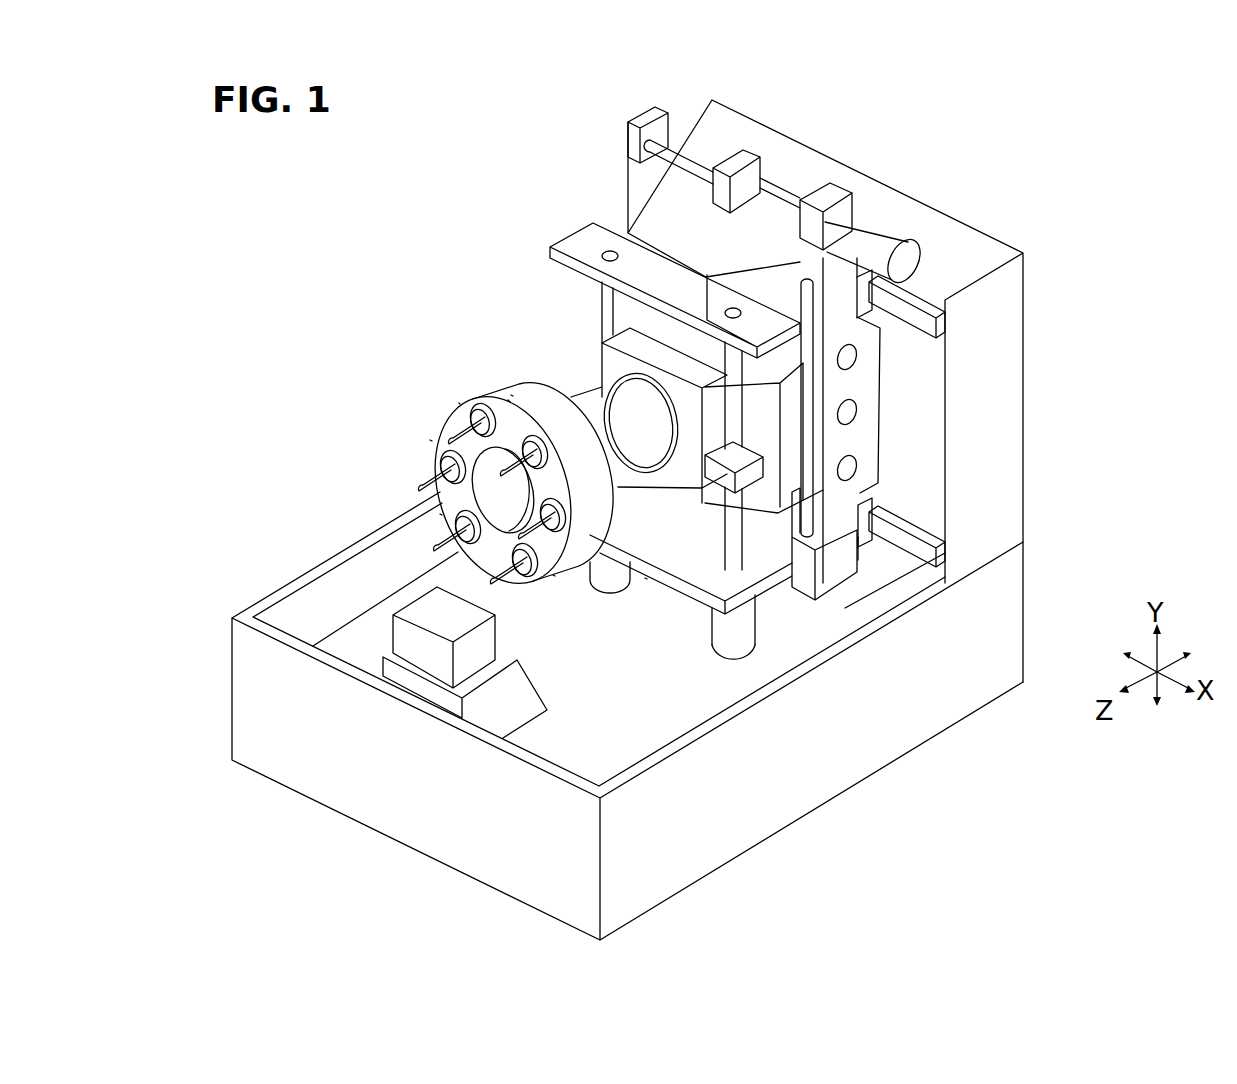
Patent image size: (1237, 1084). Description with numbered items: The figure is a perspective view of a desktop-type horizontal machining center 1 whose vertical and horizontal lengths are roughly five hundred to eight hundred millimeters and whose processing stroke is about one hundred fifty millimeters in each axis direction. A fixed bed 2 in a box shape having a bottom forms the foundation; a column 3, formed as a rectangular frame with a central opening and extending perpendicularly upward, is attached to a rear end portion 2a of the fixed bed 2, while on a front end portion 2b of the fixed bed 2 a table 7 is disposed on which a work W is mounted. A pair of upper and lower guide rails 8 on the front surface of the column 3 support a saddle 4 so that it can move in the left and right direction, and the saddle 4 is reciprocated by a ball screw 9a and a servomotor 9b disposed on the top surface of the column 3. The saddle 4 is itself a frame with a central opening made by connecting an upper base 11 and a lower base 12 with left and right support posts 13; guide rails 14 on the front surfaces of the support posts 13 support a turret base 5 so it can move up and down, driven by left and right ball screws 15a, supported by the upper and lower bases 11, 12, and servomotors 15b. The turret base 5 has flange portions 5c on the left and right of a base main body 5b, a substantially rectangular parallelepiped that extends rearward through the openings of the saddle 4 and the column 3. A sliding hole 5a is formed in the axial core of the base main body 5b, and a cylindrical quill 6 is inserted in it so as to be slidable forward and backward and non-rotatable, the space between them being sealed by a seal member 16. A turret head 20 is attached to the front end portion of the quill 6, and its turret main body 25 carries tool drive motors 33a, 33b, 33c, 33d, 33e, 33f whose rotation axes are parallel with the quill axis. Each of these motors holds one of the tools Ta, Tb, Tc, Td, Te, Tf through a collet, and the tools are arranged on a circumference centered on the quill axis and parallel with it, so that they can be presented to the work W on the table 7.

The horizontal machining center 1 is at (453, 192).
The fixed bed 2 is at (347, 550).
The rear end portion 2a is at (1010, 540).
The front end portion 2b is at (303, 573).
The column 3 is at (1024, 351).
The saddle 4 is at (878, 421).
The turret base 5 is at (777, 513).
The sliding hole 5a is at (652, 488).
The base main body 5b is at (690, 494).
The flange portion 5c is at (762, 496).
The quill 6 is at (594, 395).
The table 7 is at (520, 694).
The guide rail 8 is at (940, 298).
The ball screw 9a is at (780, 190).
The servomotor 9b is at (888, 226).
The upper base 11 is at (577, 232).
The lower base 12 is at (668, 592).
The support post 13 is at (878, 449).
The guide rail 14 is at (830, 520).
The ball screw 15a is at (600, 322).
The servomotor 15b is at (608, 596).
The seal member 16 is at (631, 386).
The turret head 20 is at (479, 376).
The turret main body 25 is at (460, 404).
The tool drive motor 33a is at (509, 401).
The tool drive motor 33b is at (430, 440).
The tool drive motor 33c is at (440, 513).
The tool drive motor 33d is at (553, 576).
The tool drive motor 33e is at (646, 578).
The tool drive motor 33f is at (513, 398).
The tool Ta is at (447, 428).
The tool Tb is at (425, 464).
The tool Tc is at (432, 536).
The tool Td is at (528, 578).
The tool Te is at (566, 506).
The tool Tf is at (537, 436).
The work W is at (500, 650).